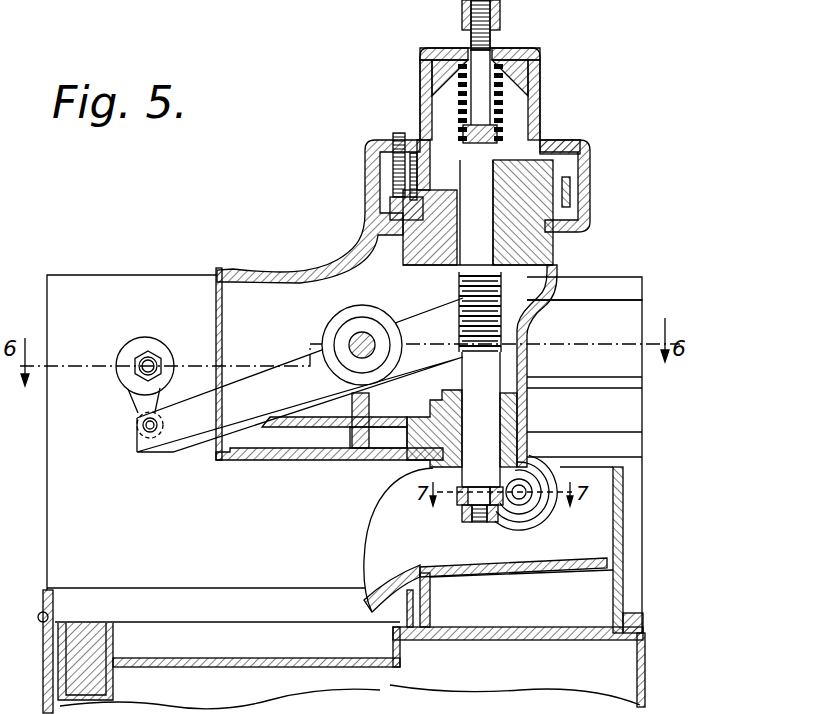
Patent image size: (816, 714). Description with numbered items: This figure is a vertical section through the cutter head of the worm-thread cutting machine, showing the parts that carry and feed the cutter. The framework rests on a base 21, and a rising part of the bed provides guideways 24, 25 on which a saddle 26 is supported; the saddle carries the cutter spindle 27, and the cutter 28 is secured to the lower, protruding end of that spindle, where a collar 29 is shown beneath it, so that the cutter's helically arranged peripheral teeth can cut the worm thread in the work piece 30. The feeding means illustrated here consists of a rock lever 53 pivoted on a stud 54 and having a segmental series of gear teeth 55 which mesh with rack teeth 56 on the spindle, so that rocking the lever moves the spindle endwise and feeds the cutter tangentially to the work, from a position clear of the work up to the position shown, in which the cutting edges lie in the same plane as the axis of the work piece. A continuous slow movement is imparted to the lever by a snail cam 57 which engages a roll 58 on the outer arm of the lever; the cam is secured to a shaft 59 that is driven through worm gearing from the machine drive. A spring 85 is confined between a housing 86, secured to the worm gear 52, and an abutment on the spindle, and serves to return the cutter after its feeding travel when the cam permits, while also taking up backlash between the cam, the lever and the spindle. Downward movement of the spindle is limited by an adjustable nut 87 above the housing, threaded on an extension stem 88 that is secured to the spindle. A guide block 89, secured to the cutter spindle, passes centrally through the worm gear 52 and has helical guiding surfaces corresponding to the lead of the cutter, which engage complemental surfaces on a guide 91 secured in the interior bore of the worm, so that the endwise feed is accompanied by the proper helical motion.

The base 21 is at (645, 687).
The guideway 24 is at (622, 410).
The guideway 25 is at (600, 290).
The saddle 26 is at (527, 338).
The cutter spindle 27 is at (480, 432).
The cutter 28 is at (465, 516).
The collar 29 is at (458, 500).
The work piece 30 is at (524, 500).
The worm gear 52 is at (578, 194).
The rock lever 53 is at (288, 352).
The stud 54 is at (362, 340).
The gear teeth 55 is at (455, 304).
The rack teeth 56 is at (503, 318).
The snail cam 57 is at (122, 385).
The roll 58 is at (140, 426).
The shaft 59 is at (148, 352).
The spring 85 is at (466, 128).
The housing 86 is at (436, 52).
The adjustable nut 87 is at (500, 22).
The extension stem 88 is at (480, 108).
The guide block 89 is at (538, 148).
The guide 91 is at (442, 178).